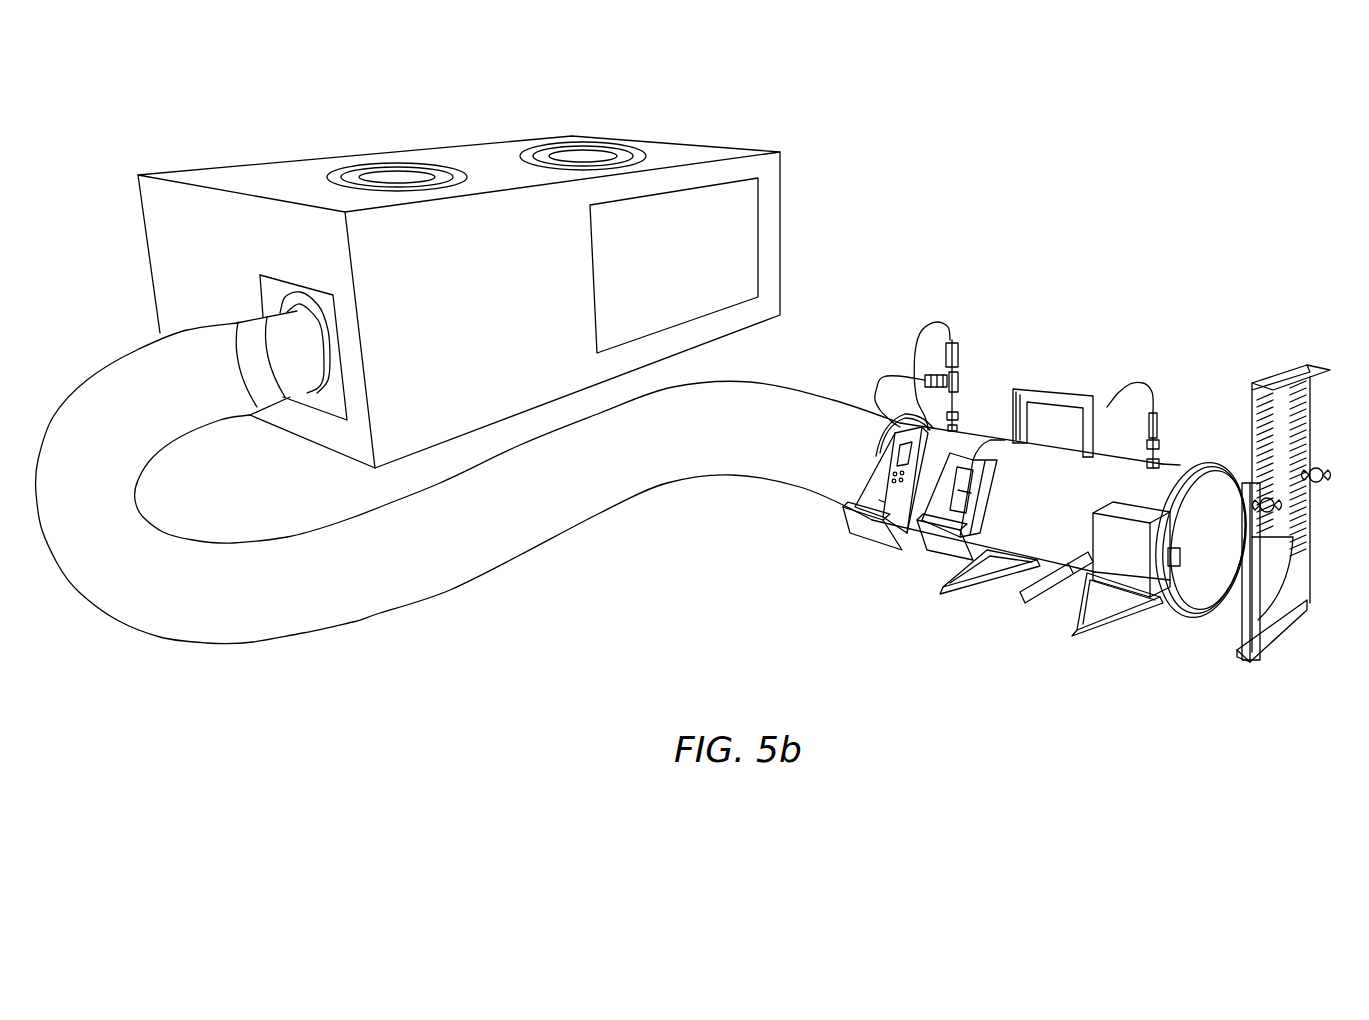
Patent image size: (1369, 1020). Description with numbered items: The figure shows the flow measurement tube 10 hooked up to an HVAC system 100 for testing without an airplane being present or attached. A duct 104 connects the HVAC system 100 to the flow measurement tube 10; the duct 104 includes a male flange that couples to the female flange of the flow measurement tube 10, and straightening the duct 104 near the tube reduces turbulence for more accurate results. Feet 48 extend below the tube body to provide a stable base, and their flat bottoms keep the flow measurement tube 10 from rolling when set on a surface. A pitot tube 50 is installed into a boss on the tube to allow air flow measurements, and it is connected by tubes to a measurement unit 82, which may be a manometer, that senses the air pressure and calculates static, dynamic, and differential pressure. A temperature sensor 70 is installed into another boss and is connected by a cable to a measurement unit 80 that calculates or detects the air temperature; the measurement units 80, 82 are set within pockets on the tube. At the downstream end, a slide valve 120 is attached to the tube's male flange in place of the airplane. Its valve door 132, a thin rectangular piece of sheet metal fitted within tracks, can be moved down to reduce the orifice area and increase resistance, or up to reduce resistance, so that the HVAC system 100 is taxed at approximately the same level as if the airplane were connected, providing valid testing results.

The flow measurement tube 10 is at (1080, 344).
The feet 48 is at (1077, 633).
The pitot tube 50 is at (958, 383).
The temperature sensor 70 is at (1159, 421).
The measurement unit 80 is at (978, 497).
The measurement unit 82 is at (889, 490).
The HVAC system 100 is at (284, 168).
The duct 104 is at (343, 615).
The slide valve 120 is at (1212, 595).
The valve door 132 is at (1283, 418).